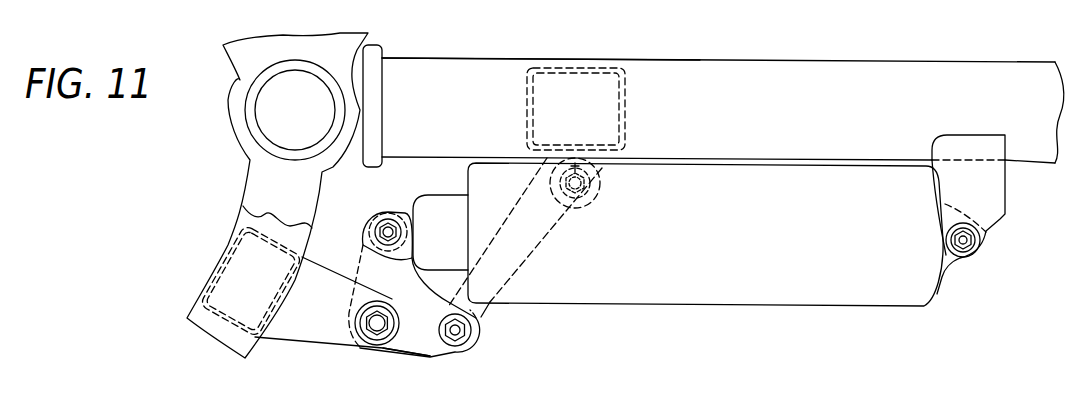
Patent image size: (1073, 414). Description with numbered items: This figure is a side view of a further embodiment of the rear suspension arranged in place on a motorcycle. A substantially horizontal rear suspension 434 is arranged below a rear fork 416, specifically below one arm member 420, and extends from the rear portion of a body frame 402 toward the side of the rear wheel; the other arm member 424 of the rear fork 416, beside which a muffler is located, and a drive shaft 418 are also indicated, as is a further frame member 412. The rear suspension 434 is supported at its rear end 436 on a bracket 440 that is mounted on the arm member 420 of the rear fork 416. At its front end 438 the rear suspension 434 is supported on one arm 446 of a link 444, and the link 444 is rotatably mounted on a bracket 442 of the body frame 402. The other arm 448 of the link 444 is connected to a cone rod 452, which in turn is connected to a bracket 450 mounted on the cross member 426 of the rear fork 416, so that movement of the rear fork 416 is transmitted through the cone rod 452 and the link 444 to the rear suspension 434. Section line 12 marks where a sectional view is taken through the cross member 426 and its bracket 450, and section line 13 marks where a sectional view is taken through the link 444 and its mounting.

The section line 12— 12 is at (417, 380).
The section line 13— 13 is at (338, 320).
The body frame 402 is at (200, 315).
The frame member 412 is at (723, 409).
The rear fork 416 is at (770, 58).
The drive shaft 418 is at (541, 407).
The arm member 420 is at (690, 70).
The other arm member 424 is at (950, 409).
The cross member 426 is at (610, 63).
The rear suspension 434 is at (843, 310).
The rear end 436 is at (947, 265).
The front end 438 is at (412, 208).
The bracket 440 is at (995, 190).
The bracket 442 is at (287, 332).
The link 444 is at (435, 360).
The arm 446 is at (368, 265).
The other arm 448 is at (443, 352).
The bracket 450 is at (600, 163).
The cone rod 452 is at (483, 323).